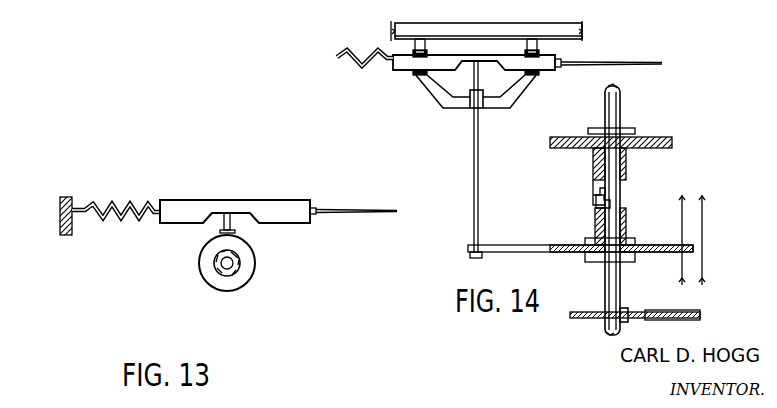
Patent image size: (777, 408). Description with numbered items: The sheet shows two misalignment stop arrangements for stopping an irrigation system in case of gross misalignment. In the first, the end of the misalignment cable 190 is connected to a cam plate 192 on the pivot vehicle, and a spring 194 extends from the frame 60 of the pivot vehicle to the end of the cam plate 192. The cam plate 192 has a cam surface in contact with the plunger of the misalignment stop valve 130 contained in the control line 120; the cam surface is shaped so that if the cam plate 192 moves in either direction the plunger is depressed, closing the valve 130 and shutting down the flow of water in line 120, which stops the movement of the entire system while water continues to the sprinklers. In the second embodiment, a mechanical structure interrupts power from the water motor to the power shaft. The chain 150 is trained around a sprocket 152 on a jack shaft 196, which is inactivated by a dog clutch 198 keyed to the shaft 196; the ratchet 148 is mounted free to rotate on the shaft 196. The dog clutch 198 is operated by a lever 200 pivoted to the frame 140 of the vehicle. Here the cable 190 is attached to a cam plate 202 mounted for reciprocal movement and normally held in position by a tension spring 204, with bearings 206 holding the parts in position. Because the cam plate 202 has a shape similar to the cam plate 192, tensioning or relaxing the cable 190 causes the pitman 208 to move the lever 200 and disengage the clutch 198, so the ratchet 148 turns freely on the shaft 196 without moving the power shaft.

In FIG. 13, the frame 60 is at (62, 197).
In FIG. 13, the spring 194 is at (100, 217).
In FIG. 13, the cam plate 192 is at (165, 224).
In FIG. 13, the misalignment cable 190 is at (318, 215).
In FIG. 14, the misalignment cable 190 is at (646, 65).
In FIG. 13, the control line 120 is at (237, 256).
In FIG. 13, the misalignment stop valve 130 is at (240, 291).
In FIG. 14, the frame 140 is at (515, 24).
In FIG. 14, the cam plate 202 is at (416, 73).
In FIG. 14, the tension spring 204 is at (361, 68).
In FIG. 14, the bearings 206 is at (498, 110).
In FIG. 14, the pitman 208 is at (479, 170).
In FIG. 14, the jack shaft 196 is at (620, 116).
In FIG. 14, the ratchet 148 is at (672, 143).
In FIG. 14, the dog clutch 198 is at (598, 205).
In FIG. 14, the lever 200 is at (551, 245).
In FIG. 14, the chain 150 is at (682, 312).
In FIG. 14, the sprocket 152 is at (625, 310).